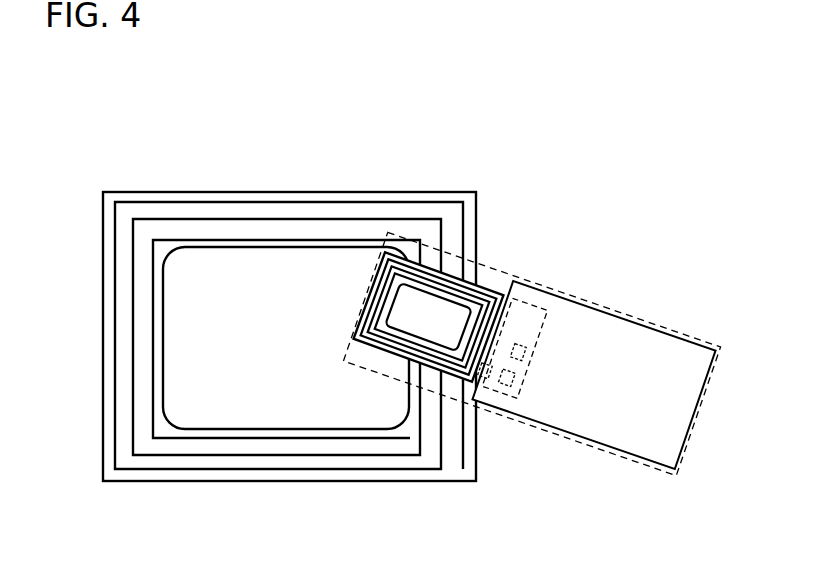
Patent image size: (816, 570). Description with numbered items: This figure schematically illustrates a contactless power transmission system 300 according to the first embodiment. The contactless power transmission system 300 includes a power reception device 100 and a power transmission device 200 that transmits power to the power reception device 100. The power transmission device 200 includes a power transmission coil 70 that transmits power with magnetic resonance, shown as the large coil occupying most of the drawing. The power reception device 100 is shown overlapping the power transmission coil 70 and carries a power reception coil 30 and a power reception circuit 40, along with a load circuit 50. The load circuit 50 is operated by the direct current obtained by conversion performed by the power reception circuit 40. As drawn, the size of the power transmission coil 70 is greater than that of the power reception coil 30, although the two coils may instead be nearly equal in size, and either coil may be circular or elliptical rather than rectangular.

The contactless power transmission system 300 is at (531, 299).
The power transmission device 200 is at (158, 191).
The power transmission coil 70 is at (217, 201).
The power reception coil 30 is at (487, 290).
The power reception circuit 40 is at (520, 343).
The load circuit 50 is at (622, 330).
The power reception device 100 is at (578, 440).